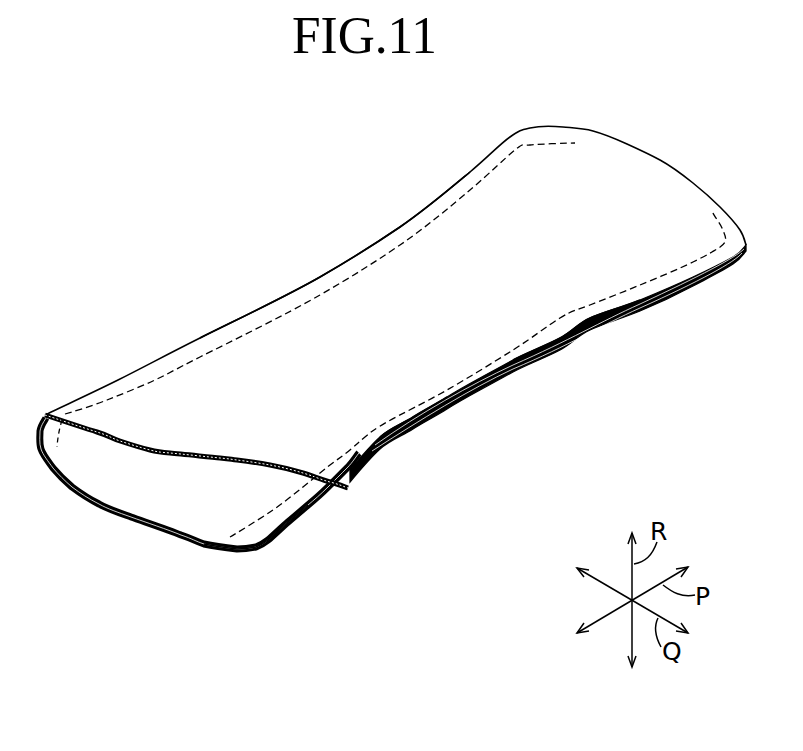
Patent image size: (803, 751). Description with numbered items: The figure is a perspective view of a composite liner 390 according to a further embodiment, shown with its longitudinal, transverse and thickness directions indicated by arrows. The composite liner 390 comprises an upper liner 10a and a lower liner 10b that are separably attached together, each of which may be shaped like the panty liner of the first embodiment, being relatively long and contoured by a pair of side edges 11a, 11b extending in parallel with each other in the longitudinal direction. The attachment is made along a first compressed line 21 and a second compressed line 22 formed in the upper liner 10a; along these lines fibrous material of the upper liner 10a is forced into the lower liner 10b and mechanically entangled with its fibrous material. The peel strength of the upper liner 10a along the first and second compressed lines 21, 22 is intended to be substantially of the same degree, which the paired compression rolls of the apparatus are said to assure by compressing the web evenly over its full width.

The composite liner 390 is at (624, 127).
The first compressed line 21 is at (486, 182).
The second compressed line 22 is at (617, 293).
The side edge 11a is at (394, 230).
The side edge 11b is at (542, 341).
The upper liner 10a is at (350, 424).
The lower liner 10b is at (235, 513).